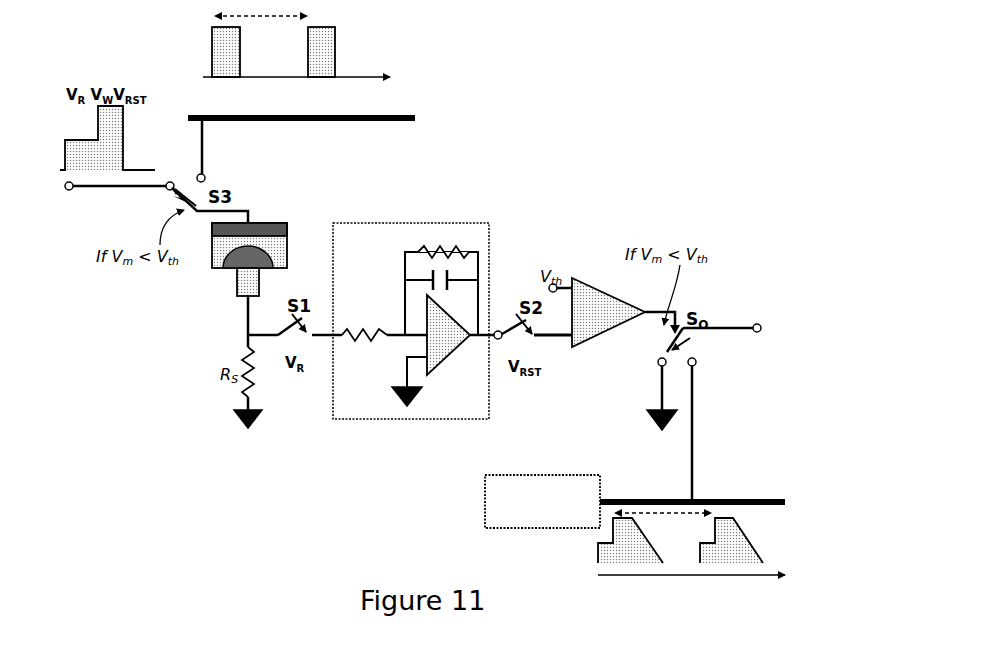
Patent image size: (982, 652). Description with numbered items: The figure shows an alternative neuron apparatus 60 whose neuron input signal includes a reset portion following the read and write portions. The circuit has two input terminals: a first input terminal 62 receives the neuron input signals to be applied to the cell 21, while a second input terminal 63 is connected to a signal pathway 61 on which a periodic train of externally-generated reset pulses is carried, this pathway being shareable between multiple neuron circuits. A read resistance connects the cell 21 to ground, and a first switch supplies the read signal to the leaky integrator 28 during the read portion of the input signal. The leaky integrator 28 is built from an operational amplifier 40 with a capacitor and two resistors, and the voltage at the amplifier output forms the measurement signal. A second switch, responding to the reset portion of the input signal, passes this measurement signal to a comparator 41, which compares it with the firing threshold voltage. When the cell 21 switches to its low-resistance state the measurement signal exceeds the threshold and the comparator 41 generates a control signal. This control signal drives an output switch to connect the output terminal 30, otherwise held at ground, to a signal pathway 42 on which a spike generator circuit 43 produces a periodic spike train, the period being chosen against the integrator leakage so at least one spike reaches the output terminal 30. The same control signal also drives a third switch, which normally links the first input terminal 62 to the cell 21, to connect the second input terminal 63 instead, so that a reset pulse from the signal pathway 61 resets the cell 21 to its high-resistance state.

The neuron apparatus 60 is at (612, 135).
The signal pathway 61 is at (397, 116).
The first input terminal 62 is at (172, 181).
The second input terminal 63 is at (207, 176).
The cell 21 is at (288, 230).
The leaky integrator 28 is at (413, 318).
The operational amplifier 40 is at (447, 362).
The comparator 41 is at (586, 282).
The output terminal 30 is at (748, 324).
The signal pathway 42 is at (750, 499).
The spike generator circuit 43 is at (545, 476).